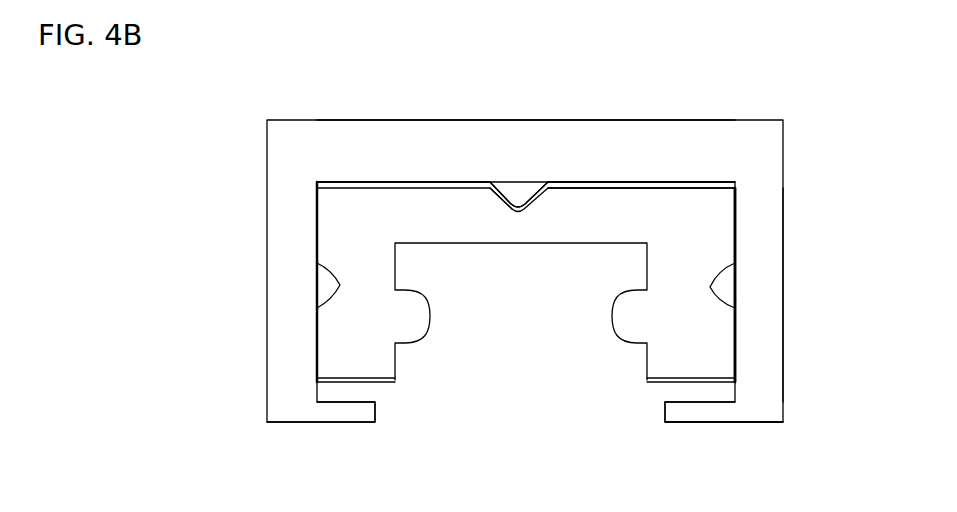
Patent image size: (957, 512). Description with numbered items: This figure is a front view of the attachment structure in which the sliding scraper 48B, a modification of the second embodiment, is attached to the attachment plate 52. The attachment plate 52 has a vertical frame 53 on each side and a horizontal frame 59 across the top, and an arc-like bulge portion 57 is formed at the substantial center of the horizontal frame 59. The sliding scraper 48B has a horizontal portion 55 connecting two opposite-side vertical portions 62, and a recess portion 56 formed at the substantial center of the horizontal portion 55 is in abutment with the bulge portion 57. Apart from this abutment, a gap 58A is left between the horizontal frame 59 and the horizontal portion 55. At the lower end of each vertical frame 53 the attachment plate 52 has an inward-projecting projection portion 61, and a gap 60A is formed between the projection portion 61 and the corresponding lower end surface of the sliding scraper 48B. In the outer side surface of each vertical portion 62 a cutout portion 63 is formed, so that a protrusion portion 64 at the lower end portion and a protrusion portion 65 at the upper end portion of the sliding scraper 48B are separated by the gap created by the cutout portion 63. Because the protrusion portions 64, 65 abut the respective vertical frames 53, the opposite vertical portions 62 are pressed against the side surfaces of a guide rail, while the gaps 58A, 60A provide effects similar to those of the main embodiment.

The sliding scraper 48B is at (737, 198).
The attachment plate 52 is at (725, 120).
The vertical frame 53 is at (763, 268).
The horizontal portion 55 is at (587, 205).
The recess portion 56 is at (505, 200).
The bulge portion 57 is at (523, 177).
The gap 58A is at (358, 182).
The horizontal frame 59 is at (396, 130).
The gap 60A is at (332, 394).
The projection portion 61 is at (677, 413).
The vertical portion 62 is at (380, 365).
The cutout portion 63 is at (330, 287).
The protrusion portion 64 is at (736, 350).
The protrusion portion 65 is at (736, 228).